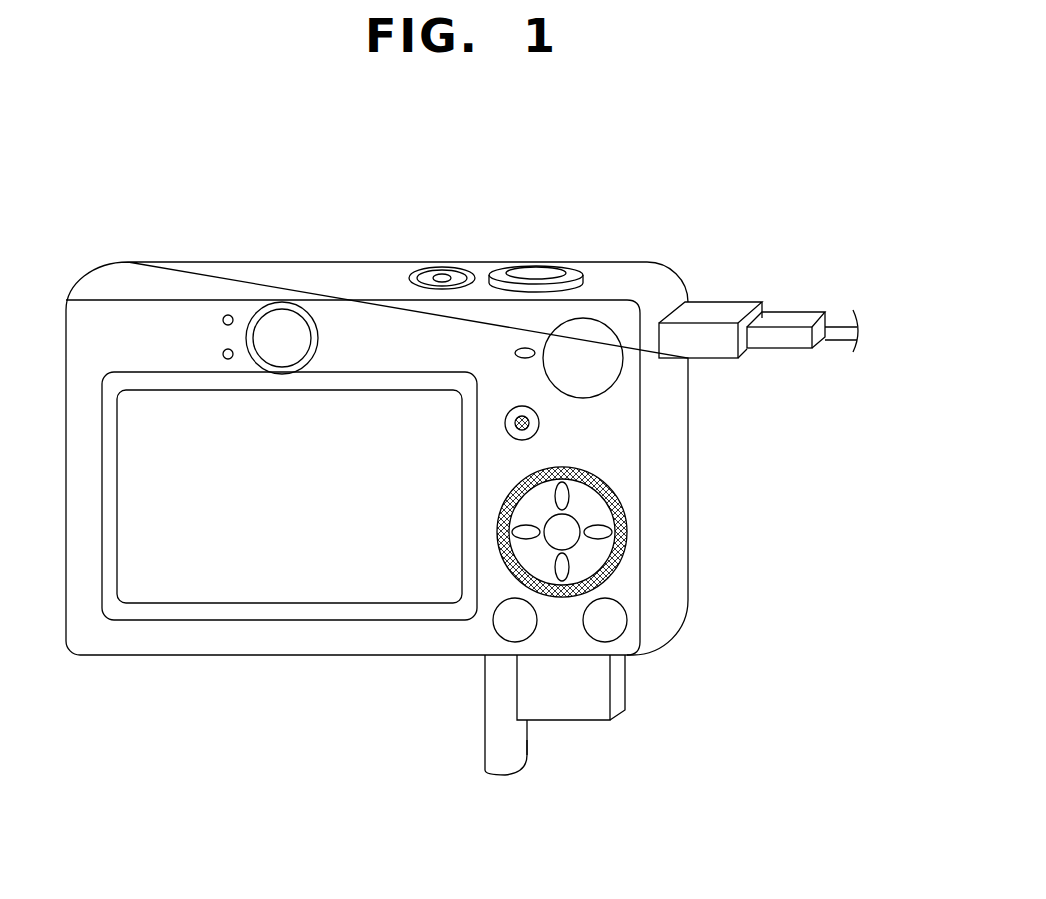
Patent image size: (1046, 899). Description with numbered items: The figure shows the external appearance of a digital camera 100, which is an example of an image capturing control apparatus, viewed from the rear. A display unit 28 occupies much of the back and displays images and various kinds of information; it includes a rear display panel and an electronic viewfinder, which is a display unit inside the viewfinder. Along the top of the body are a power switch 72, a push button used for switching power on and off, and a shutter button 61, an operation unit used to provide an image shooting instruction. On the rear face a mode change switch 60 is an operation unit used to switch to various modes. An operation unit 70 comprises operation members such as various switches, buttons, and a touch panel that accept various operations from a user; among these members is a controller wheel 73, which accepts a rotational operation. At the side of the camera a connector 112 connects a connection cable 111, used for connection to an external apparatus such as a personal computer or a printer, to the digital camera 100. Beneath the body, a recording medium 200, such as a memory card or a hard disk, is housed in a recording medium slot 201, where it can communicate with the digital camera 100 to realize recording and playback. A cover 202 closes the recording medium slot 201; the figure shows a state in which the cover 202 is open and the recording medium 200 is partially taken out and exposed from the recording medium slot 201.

The digital camera 100 is at (282, 732).
The display unit 28 is at (178, 413).
The power switch 72 is at (437, 272).
The shutter button 61 is at (533, 272).
The mode change switch 60 is at (605, 325).
The controller wheel 73 is at (532, 469).
The operation unit 70 is at (535, 292).
The connector 112 is at (713, 312).
The connection cable 111 is at (790, 322).
The recording medium 200 is at (585, 710).
The recording medium slot 201 is at (535, 658).
The cover 202 is at (533, 757).